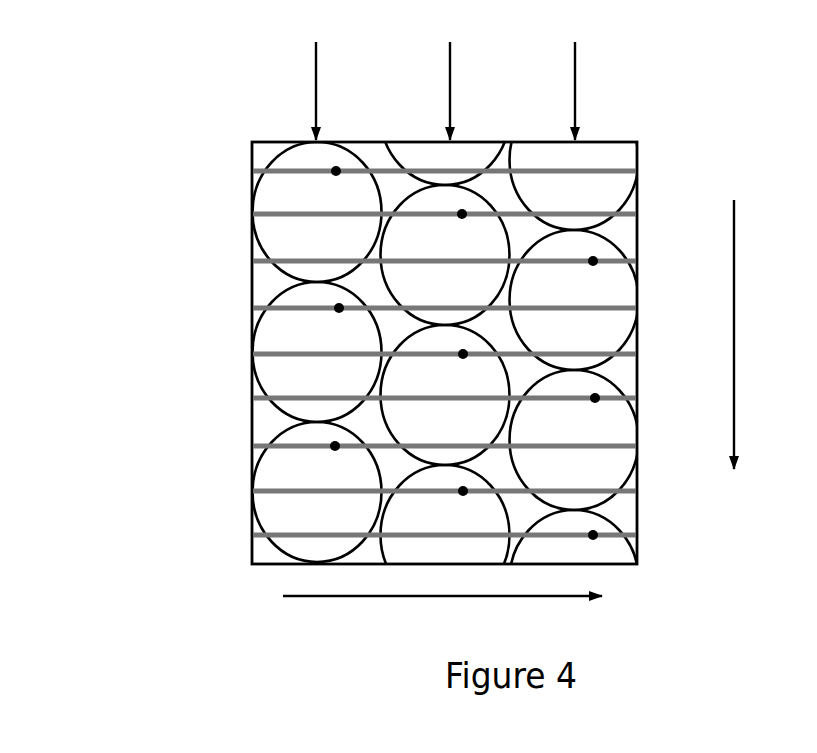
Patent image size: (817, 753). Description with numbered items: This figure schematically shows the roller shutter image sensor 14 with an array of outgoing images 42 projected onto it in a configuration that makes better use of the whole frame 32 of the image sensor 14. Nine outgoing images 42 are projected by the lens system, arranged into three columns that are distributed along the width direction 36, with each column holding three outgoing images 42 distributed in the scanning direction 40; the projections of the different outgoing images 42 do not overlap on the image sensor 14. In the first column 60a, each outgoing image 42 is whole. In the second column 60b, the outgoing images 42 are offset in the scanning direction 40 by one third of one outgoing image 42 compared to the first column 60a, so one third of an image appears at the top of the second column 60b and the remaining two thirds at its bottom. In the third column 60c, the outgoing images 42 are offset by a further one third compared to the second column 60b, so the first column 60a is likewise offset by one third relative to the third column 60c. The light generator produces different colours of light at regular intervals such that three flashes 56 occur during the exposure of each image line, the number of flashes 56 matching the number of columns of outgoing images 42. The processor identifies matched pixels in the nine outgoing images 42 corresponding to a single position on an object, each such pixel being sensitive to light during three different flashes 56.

The roller shutter image sensor 14 is at (186, 283).
The frame 32 is at (252, 328).
The width direction 36 is at (298, 598).
The scanning direction 40 is at (734, 358).
The outgoing images 42 is at (252, 240).
The flashes 56 is at (266, 166).
The first column 60a is at (323, 79).
The second column 60b is at (456, 79).
The third column 60c is at (579, 79).